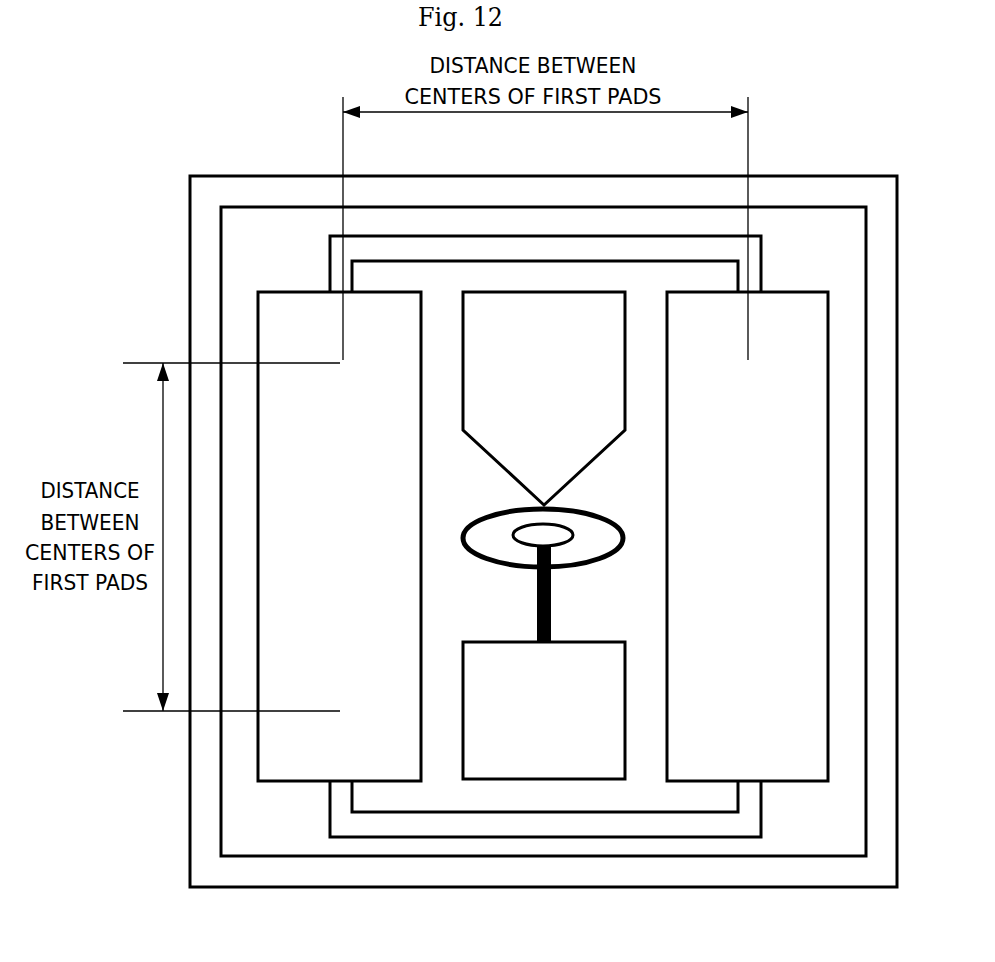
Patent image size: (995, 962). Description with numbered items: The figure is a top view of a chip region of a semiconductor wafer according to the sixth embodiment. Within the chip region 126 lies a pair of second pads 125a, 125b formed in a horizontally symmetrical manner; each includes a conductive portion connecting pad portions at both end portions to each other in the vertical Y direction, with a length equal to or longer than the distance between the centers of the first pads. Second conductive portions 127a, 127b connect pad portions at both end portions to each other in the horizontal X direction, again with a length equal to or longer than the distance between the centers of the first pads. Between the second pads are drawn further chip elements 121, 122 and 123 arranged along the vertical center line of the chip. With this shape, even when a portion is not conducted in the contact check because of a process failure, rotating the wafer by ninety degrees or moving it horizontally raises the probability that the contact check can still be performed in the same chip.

The ring-shaped electrode 121 is at (585, 566).
The lower connection pad 122 is at (500, 641).
The upper tapered electrode 123 is at (492, 462).
The second pad 125a is at (288, 293).
The second pad 125b is at (807, 293).
The substrate frame 126 is at (870, 176).
The second conductive portion 127a is at (548, 252).
The second conductive portion 127b is at (550, 826).